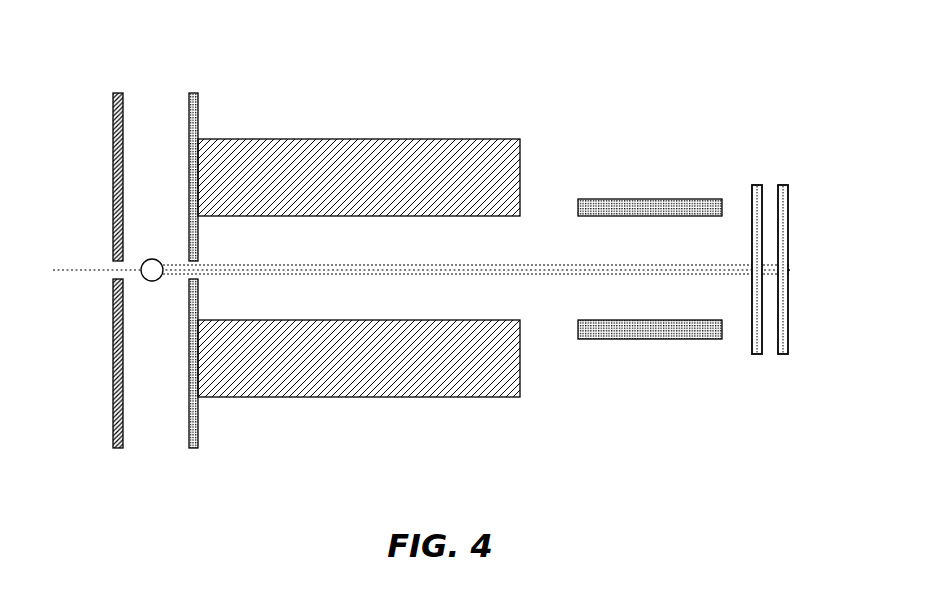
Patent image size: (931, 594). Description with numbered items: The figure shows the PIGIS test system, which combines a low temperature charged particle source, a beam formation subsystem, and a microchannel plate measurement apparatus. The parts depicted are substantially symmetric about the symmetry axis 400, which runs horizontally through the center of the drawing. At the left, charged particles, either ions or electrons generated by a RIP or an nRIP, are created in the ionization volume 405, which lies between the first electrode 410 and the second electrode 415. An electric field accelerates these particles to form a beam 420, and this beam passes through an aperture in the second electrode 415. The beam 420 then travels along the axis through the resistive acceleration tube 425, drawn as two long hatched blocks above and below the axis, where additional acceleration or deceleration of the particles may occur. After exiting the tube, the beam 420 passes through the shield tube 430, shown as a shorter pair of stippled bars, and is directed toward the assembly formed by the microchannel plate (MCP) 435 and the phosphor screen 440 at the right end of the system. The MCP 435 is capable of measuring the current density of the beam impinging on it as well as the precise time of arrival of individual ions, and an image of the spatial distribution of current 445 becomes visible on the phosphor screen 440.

The symmetry axis 400 is at (77, 263).
The ionization volume 405 is at (153, 286).
The first electrode 410 is at (116, 87).
The second electrode 415 is at (195, 87).
The beam 420 is at (562, 262).
The resistive acceleration tube 425 is at (302, 132).
The shield tube 430 is at (633, 193).
The microchannel plate (MCP) 435 is at (753, 178).
The phosphor screen 440 is at (784, 178).
The spatial distribution of current 445 is at (793, 266).